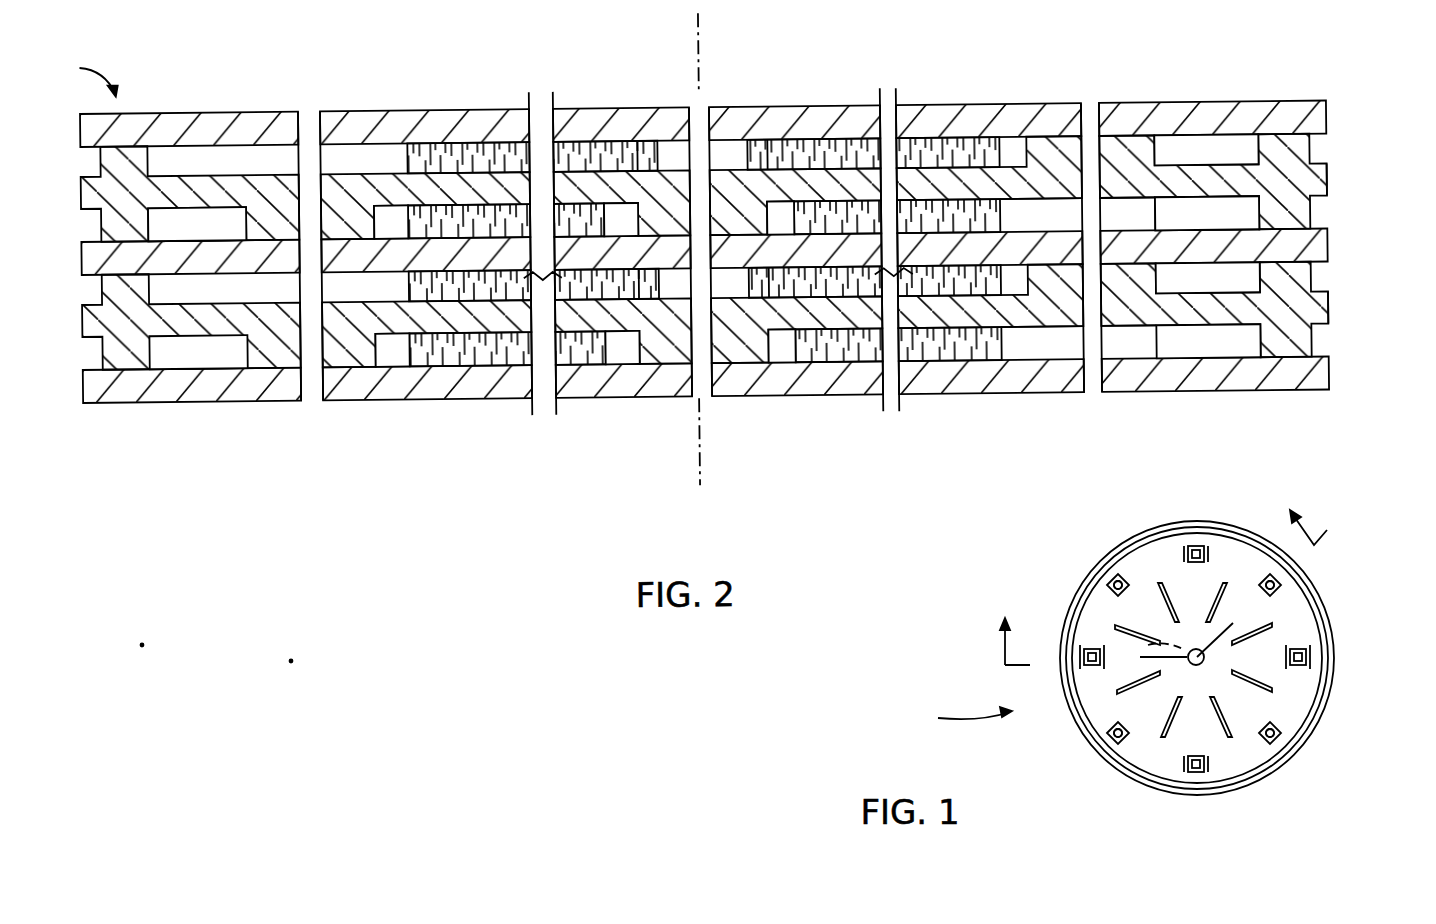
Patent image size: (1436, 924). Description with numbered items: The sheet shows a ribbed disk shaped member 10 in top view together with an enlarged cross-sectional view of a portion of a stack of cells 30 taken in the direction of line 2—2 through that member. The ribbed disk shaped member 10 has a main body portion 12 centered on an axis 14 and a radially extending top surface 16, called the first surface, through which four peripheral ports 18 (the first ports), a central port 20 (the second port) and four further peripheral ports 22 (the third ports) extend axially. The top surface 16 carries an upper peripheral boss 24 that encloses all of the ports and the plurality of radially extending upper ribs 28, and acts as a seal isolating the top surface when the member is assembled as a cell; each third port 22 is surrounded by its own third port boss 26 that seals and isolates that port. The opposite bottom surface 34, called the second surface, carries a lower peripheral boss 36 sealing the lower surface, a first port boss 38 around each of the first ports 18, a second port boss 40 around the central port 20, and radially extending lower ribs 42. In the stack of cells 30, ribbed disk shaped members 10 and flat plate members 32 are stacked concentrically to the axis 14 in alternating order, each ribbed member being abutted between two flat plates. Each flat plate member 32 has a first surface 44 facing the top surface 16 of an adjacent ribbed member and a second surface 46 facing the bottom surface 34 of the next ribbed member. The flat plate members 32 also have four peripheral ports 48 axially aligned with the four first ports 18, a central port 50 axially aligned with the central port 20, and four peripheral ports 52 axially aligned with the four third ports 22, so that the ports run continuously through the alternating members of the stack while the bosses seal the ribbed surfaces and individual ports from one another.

In FIG. 1, the line 2— 2 is at (1159, 570).
In FIG. 1, the ribbed disk shaped member 10 is at (958, 720).
In FIG. 2, the main body portion 12 is at (1327, 206).
In FIG. 1, the main body portion 12 is at (1334, 645).
In FIG. 2, the axis 14 is at (700, 92).
In FIG. 2, the radially extending top surface 16 is at (165, 176).
In FIG. 1, the radially extending top surface 16 is at (1228, 560).
In FIG. 2, the peripheral ports 18 is at (316, 176).
In FIG. 1, the peripheral ports 18 is at (1190, 545).
In FIG. 2, the central port 20 is at (718, 462).
In FIG. 1, the central port 20 is at (1200, 665).
In FIG. 2, the peripheral ports 22 is at (1043, 275).
In FIG. 1, the peripheral ports 22 is at (1110, 578).
In FIG. 2, the upper peripheral boss 24 is at (100, 157).
In FIG. 1, the upper peripheral boss 24 is at (1074, 640).
In FIG. 2, the third port boss 26 is at (1195, 158).
In FIG. 1, the third port boss 26 is at (1108, 588).
In FIG. 2, the upper ribs 28 is at (407, 162).
In FIG. 1, the upper ribs 28 is at (1207, 618).
In FIG. 2, the stack of cells 30 is at (81, 77).
In FIG. 2, the flat plate member 32 is at (1323, 128).
In FIG. 2, the bottom surface 34 is at (200, 225).
In FIG. 2, the lower peripheral boss 36 is at (100, 220).
In FIG. 2, the first port boss 38 is at (228, 208).
In FIG. 1, the first port boss 38 is at (1183, 552).
In FIG. 2, the second port boss 40 is at (630, 142).
In FIG. 1, the second port boss 40 is at (1183, 645).
In FIG. 2, the lower ribs 42 is at (455, 228).
In FIG. 2, the first surface 44 is at (235, 152).
In FIG. 2, the second surface 46 is at (1216, 356).
In FIG. 2, the peripheral ports 48 is at (308, 120).
In FIG. 2, the central port 50 is at (704, 118).
In FIG. 2, the peripheral ports 52 is at (1092, 125).